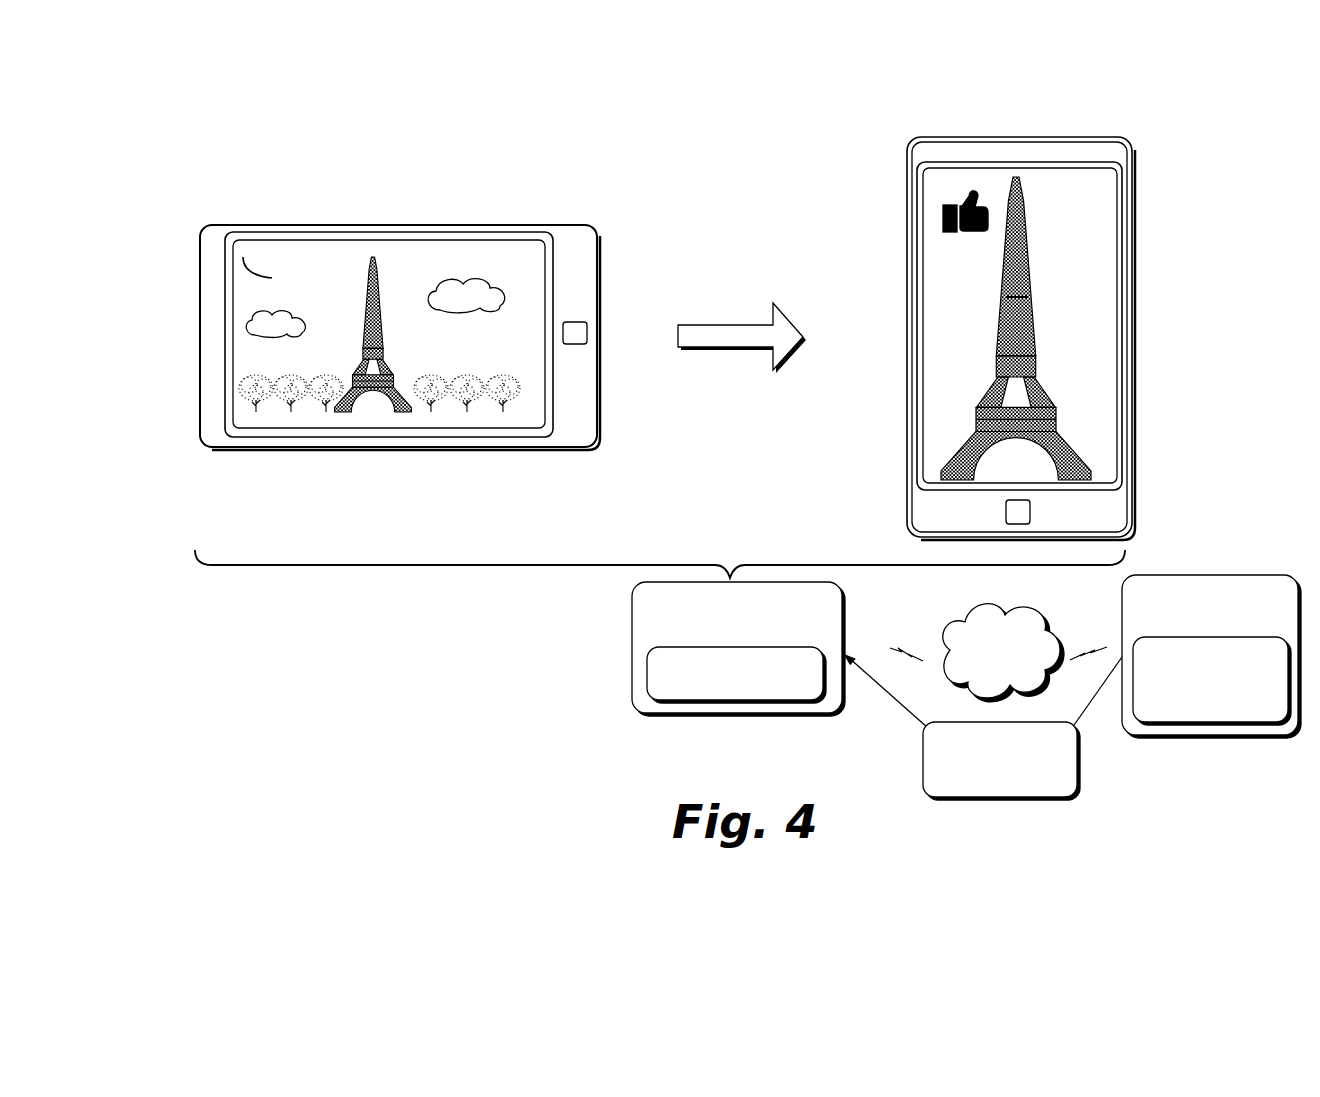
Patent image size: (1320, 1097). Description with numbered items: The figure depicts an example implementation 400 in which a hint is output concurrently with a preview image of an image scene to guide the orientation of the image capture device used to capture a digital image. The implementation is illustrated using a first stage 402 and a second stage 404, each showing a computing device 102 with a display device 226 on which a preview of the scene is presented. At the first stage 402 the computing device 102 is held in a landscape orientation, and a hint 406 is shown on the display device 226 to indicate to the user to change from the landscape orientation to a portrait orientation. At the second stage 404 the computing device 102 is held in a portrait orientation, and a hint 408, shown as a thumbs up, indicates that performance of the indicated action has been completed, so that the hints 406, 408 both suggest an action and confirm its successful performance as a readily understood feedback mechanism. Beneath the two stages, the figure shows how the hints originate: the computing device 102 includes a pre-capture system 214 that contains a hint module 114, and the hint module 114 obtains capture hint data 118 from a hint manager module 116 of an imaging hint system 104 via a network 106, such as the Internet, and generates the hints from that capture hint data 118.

The example implementation 400 is at (257, 132).
The first stage 402 is at (397, 192).
The second stage 404 is at (1028, 110).
The hint 406 is at (260, 248).
The hint 408 is at (943, 205).
The computing device 102 is at (568, 224).
The display device 226 is at (458, 238).
The pre-capture system 214 is at (738, 649).
The hint module 114 is at (736, 675).
The imaging hint system 104 is at (1211, 656).
The hint manager module 116 is at (1212, 681).
The network 106 is at (1003, 653).
The capture hint data 118 is at (1001, 761).